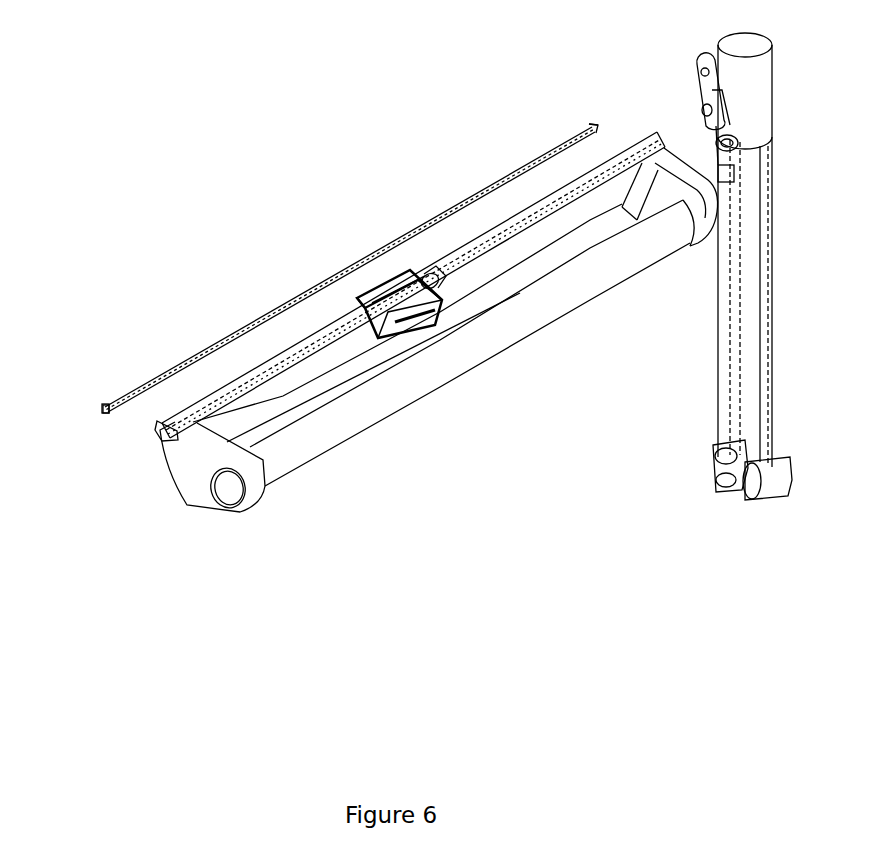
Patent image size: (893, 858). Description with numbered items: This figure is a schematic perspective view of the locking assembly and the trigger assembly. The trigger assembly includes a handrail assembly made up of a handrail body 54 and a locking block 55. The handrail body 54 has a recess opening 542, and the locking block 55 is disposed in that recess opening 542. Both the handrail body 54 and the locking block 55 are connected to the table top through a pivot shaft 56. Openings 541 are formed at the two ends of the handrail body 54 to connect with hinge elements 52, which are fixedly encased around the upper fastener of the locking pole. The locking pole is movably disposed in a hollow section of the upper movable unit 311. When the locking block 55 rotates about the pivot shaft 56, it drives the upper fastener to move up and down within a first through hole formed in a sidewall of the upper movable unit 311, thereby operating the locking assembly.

The handrail body 54 is at (290, 333).
The openings 541 is at (104, 409).
The recess opening 542 is at (428, 276).
The locking block 55 is at (400, 298).
The pivot shaft 56 is at (152, 440).
The hinge elements 52 is at (700, 92).
The upper movable unit 311 is at (755, 333).